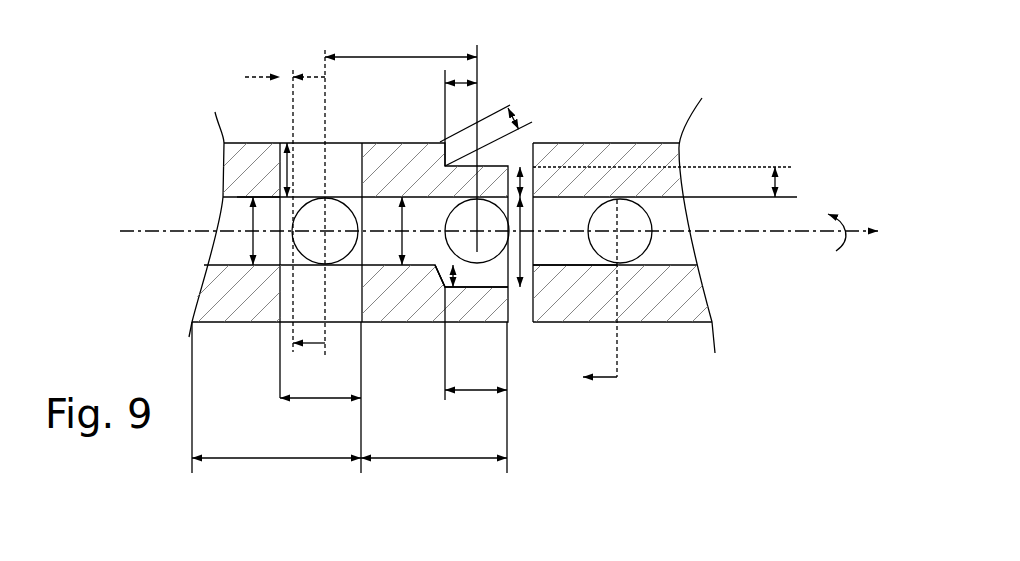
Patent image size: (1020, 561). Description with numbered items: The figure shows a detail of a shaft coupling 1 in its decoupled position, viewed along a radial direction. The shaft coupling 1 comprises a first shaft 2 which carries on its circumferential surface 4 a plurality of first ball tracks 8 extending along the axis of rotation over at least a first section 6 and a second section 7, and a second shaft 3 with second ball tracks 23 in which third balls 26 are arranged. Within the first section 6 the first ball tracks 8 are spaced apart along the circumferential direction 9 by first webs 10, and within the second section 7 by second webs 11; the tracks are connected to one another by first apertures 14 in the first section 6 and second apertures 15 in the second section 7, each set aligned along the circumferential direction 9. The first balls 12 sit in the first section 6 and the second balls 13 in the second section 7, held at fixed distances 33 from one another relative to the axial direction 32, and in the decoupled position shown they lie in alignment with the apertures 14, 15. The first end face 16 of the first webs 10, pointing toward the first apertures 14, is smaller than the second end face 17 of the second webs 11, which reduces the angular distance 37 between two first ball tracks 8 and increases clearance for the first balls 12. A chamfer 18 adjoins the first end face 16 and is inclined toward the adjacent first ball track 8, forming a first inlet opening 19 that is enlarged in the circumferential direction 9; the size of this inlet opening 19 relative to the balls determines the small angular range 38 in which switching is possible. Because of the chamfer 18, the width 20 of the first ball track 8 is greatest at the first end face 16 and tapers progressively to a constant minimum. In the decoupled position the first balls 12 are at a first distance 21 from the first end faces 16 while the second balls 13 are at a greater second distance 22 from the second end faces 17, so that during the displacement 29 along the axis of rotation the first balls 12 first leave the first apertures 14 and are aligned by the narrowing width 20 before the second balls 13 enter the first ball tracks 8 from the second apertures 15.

The shaft coupling 1 is at (757, 82).
The first shaft 2 is at (230, 323).
The second shaft 3 is at (690, 310).
The circumferential surface 4 is at (200, 297).
The first section 6 is at (434, 406).
The second section 7 is at (276, 406).
The first ball track 8 is at (237, 213).
The circumferential direction 9 is at (842, 221).
The first web 10 is at (392, 153).
The second web 11 is at (237, 163).
The first ball 12 is at (477, 252).
The second ball 13 is at (325, 202).
The first aperture 14 is at (476, 354).
The second aperture 15 is at (320, 374).
The first end face 16 is at (447, 185).
The second end face 17 is at (280, 158).
The chamfer 18 is at (445, 165).
The first inlet opening 19 is at (522, 224).
The width 20 is at (550, 247).
The first distance 21 is at (470, 82).
The second distance 22 is at (292, 77).
The second ball track 23 is at (582, 265).
The third ball 26 is at (620, 288).
The displacement 29 is at (308, 366).
The axial direction 32 is at (514, 251).
The fixed distance 33 is at (401, 42).
The angular distance 37 is at (783, 180).
The angular range 38 is at (448, 290).